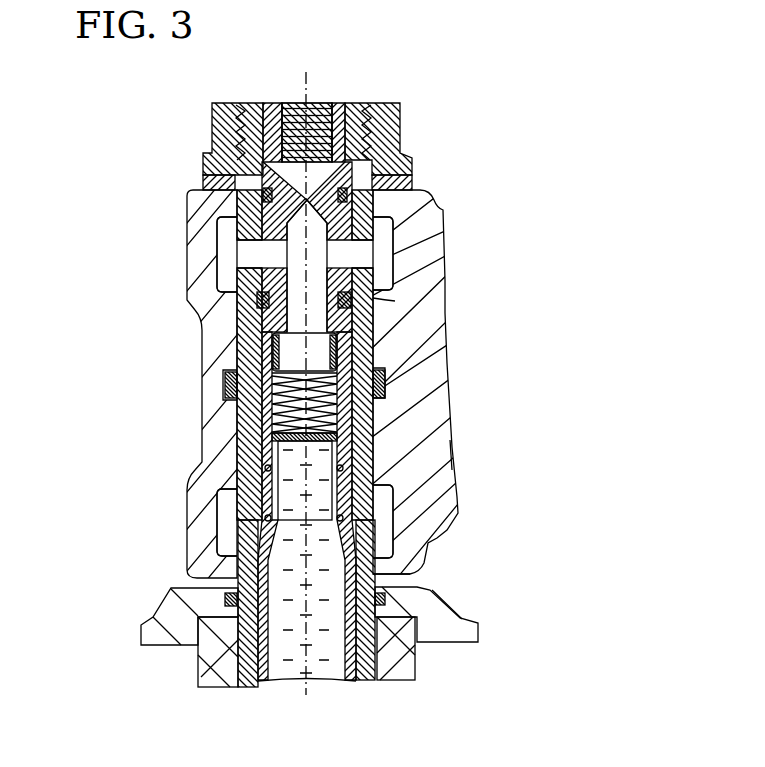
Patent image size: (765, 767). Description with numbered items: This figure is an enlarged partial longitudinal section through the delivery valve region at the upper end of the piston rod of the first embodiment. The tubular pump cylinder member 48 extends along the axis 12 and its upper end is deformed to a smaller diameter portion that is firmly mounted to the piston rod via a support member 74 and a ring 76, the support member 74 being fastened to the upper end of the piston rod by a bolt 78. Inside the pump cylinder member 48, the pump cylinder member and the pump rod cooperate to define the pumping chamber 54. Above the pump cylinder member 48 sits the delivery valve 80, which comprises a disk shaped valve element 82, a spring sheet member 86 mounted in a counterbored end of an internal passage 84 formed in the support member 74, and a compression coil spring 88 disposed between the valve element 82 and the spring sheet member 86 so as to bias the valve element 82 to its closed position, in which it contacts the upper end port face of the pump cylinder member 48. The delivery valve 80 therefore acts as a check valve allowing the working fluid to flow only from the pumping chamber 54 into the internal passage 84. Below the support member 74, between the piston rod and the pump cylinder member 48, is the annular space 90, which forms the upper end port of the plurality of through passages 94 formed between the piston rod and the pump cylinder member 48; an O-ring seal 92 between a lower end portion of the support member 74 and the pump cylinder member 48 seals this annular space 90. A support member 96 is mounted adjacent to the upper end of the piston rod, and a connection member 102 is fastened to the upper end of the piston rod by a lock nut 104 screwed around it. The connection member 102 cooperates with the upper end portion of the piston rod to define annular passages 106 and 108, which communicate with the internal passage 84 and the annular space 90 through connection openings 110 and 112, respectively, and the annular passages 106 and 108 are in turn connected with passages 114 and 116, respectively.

The axis 12 is at (300, 78).
The pump cylinder member 48 is at (347, 668).
The pumping chamber 54 is at (290, 670).
The support member 74 is at (248, 163).
The ring 76 is at (276, 444).
The bolt 78 is at (322, 100).
The delivery valve 80 is at (230, 382).
The valve element 82 is at (340, 435).
The internal passage 84 is at (297, 241).
The spring sheet member 86 is at (274, 345).
The compression coil spring 88 is at (340, 388).
The annular space 90 is at (240, 553).
The O-ring seal 92 is at (262, 516).
The through passages 94 is at (392, 672).
The support member 96 is at (215, 676).
The connection member 102 is at (410, 200).
The lock nut 104 is at (395, 122).
The annular passage 106 is at (226, 256).
The annular passage 108 is at (226, 540).
The connection opening 110 is at (395, 301).
The connection opening 112 is at (400, 566).
The passage 114 is at (438, 257).
The passage 116 is at (436, 470).